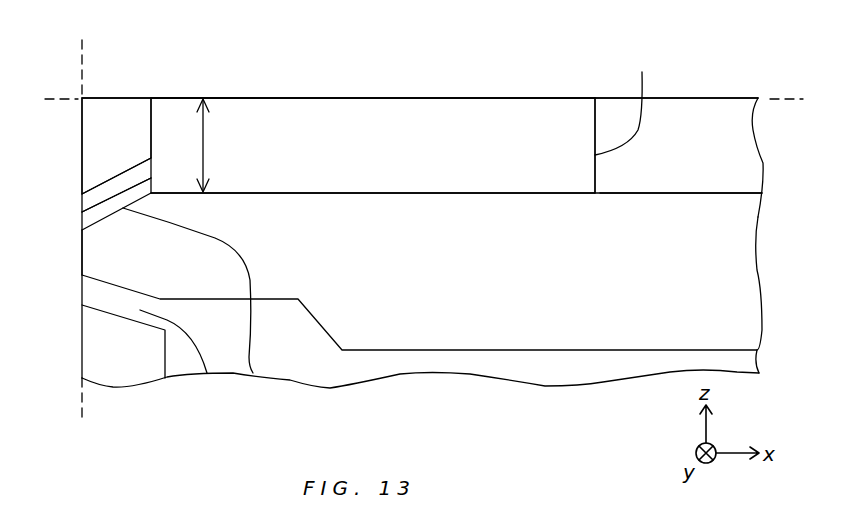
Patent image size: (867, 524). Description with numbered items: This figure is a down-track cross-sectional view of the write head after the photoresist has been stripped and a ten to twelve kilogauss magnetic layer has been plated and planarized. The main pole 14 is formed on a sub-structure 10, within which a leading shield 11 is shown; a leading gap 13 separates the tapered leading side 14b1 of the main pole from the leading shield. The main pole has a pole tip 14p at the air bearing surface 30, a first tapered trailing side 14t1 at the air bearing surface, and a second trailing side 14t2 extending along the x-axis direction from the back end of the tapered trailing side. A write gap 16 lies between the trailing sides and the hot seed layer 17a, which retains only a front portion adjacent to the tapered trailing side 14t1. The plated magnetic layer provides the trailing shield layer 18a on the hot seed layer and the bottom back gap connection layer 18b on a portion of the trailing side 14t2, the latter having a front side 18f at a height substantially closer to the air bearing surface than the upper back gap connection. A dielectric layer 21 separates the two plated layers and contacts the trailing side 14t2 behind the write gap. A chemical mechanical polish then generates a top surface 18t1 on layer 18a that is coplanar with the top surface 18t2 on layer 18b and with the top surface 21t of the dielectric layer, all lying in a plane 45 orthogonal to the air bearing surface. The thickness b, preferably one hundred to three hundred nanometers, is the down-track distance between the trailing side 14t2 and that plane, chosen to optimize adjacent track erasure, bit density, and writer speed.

The sub-structure 10 is at (330, 367).
The leading shield 11 is at (97, 366).
The leading gap 13 is at (207, 373).
The main pole 14 is at (743, 280).
The pole tip 14p is at (82, 250).
The tapered leading side 14b1 is at (113, 283).
The first tapered trailing side 14t1 is at (253, 373).
The second trailing side 14t2 is at (717, 193).
The write gap 16 is at (95, 222).
The hot seed layer 17a is at (97, 200).
The trailing shield layer 18a is at (97, 143).
The bottom BGC layer 18b is at (743, 148).
The bottom BGC layer front side 18f is at (630, 103).
The top surface 18t1 is at (125, 97).
The top surface 18t2 is at (713, 97).
The dielectric layer 21 is at (452, 118).
The top surface 21t is at (382, 98).
The ABS 30 is at (79, 230).
The plane 45 is at (422, 103).
The thickness b is at (211, 145).